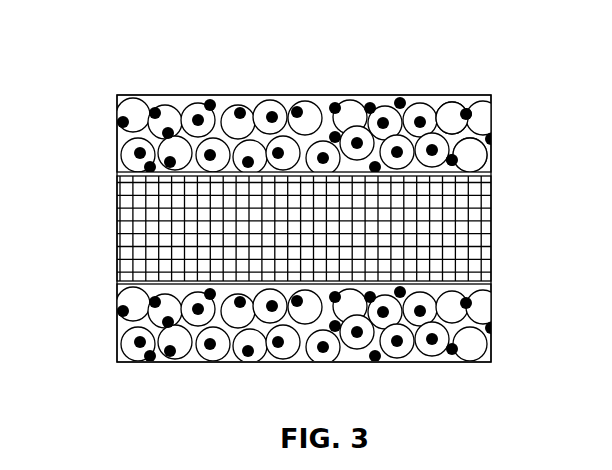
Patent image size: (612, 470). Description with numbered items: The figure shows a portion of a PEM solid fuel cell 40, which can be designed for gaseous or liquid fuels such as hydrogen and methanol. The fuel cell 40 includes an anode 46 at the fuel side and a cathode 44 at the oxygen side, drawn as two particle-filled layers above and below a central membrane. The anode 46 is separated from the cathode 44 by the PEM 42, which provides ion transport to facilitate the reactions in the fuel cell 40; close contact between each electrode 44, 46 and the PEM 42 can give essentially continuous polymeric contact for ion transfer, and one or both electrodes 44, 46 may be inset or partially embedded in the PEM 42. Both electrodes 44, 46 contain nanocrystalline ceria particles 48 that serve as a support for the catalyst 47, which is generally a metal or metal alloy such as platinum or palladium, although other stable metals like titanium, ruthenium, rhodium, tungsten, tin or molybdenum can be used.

The PEM solid fuel cell 40 is at (119, 35).
The PEM 42 is at (117, 216).
The cathode 44 is at (363, 96).
The anode 46 is at (158, 363).
The catalyst 47 is at (469, 100).
The nanocrystalline CeO2 particles 48 is at (492, 161).